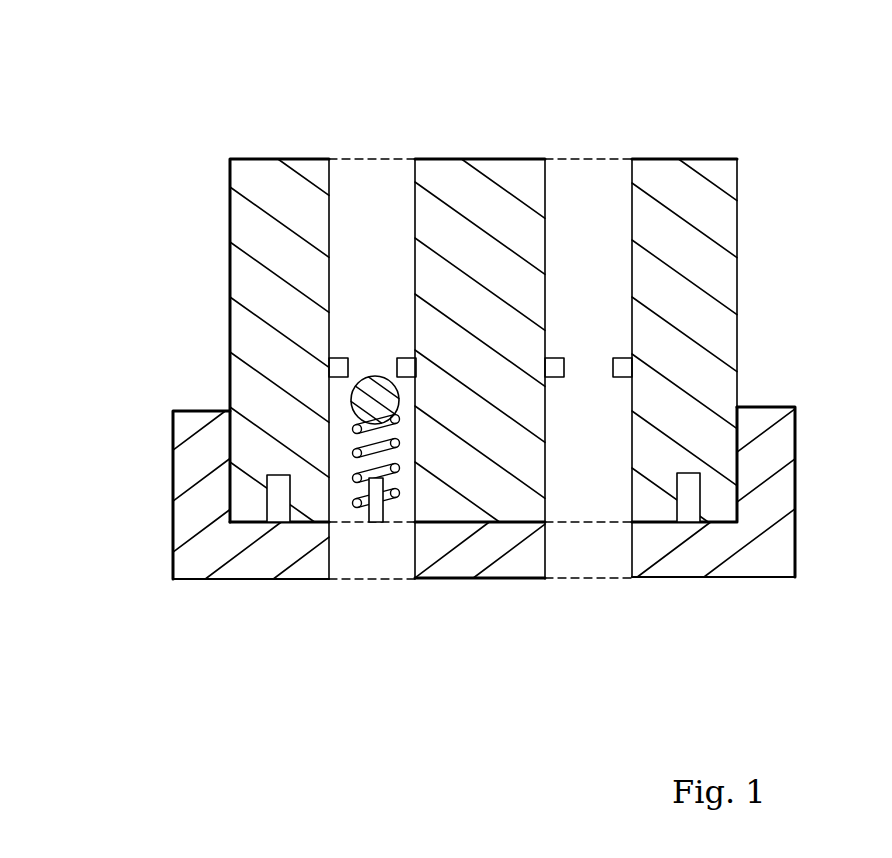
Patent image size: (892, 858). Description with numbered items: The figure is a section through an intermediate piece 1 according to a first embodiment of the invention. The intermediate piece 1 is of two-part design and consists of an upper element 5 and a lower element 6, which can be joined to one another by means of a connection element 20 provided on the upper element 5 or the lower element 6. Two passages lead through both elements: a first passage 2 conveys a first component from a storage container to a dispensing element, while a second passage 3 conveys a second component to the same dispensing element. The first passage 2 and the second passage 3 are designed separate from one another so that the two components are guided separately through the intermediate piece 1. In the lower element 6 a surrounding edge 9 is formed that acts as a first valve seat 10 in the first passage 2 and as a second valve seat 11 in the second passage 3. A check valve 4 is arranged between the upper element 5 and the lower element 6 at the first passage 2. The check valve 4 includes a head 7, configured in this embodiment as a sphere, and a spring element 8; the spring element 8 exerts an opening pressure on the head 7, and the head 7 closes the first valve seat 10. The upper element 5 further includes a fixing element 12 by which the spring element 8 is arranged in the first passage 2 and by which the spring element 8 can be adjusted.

The intermediate piece 1 is at (254, 101).
The first passage 2 is at (367, 180).
The second passage 3 is at (583, 177).
The check valve 4 is at (345, 472).
The upper element 5 is at (485, 560).
The lower element 6 is at (493, 268).
The head 7 is at (372, 393).
The spring element 8 is at (358, 450).
The surrounding edge 9 is at (352, 305).
The first valve seat 10 is at (408, 368).
The second valve seat 11 is at (557, 368).
The fixing element 12 is at (369, 504).
The connection element 20 is at (278, 513).